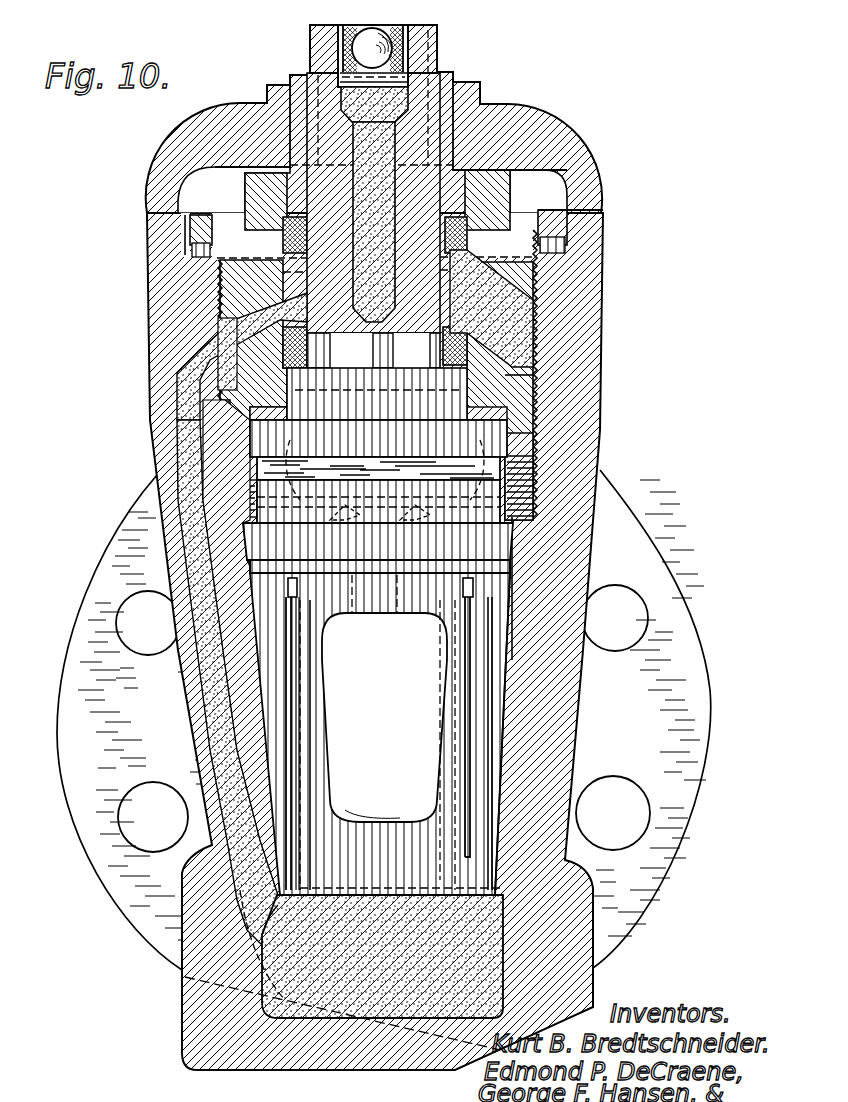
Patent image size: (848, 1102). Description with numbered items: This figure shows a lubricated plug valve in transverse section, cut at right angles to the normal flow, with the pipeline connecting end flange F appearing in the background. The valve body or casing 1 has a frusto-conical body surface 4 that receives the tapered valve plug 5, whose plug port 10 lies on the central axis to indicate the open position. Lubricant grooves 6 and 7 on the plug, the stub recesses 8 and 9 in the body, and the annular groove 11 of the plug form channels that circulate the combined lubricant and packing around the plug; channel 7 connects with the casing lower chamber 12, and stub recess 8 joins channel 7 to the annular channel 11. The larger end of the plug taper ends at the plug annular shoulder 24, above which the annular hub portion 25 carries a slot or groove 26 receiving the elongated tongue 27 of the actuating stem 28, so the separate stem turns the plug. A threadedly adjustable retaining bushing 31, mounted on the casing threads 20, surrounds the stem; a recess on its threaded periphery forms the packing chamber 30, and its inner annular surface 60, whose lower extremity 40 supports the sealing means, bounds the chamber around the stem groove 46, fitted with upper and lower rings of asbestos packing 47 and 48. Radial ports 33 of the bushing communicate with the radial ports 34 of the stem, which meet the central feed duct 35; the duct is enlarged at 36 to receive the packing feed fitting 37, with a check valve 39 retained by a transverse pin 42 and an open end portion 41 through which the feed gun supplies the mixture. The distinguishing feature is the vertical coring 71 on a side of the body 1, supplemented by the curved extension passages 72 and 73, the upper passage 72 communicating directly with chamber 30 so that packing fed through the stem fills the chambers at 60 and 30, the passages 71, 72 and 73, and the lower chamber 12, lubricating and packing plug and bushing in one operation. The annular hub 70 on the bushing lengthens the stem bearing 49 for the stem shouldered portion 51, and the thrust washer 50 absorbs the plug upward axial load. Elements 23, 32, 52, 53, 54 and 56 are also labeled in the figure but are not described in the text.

The valve body or casing 1 is at (616, 356).
The frusto-conical body surface 4 is at (258, 686).
The valve plug 5 is at (506, 835).
The lubricant groove 6 is at (464, 843).
The lubricant groove 7 is at (311, 853).
The stub recess 8 is at (299, 590).
The stub recess 9 is at (461, 586).
The plug port 10 is at (380, 802).
The annular groove 11 is at (511, 569).
The casing lower chamber 12 is at (522, 988).
The casing threads 20 is at (540, 278).
The chamber 23 is at (393, 621).
The plug annular shoulder 24 is at (513, 518).
The annular hub portion 25 is at (524, 511).
The slot or groove 26 is at (378, 438).
The elongated tongue 27 is at (398, 463).
The actuating stem 28 is at (439, 31).
The packing chamber 30 is at (545, 346).
The adjusting bushing 31 is at (534, 376).
The gasket 32 is at (336, 524).
The radial ports 33 is at (266, 305).
The radially extending ports 34 is at (383, 287).
The feed duct 35 is at (393, 211).
The enlarged upper portion 36 is at (342, 77).
The packing feed fitting 37 is at (345, 46).
The check valve 39 is at (412, 51).
The lower extremity 40 is at (313, 372).
The open end portion 41 is at (456, 104).
The transverse pin 42 is at (408, 86).
The annular groove 46 is at (276, 262).
The upper packing ring 47 is at (444, 233).
The lower packing ring 48 is at (431, 372).
The stem bearing 49 is at (500, 190).
The thrust washer 50 is at (503, 416).
The stem shouldered portion 51 is at (466, 156).
The dome 52 is at (550, 107).
The shoulder 53 is at (512, 112).
The flange 54 is at (470, 108).
The lock ring 56 is at (148, 243).
The inner annular surface 60 is at (468, 262).
The annular hub 70 is at (250, 192).
The vertical coring 71 is at (187, 469).
The upper extension passage 72 is at (216, 353).
The lower extension passage 73 is at (262, 908).
The end flange F is at (678, 612).